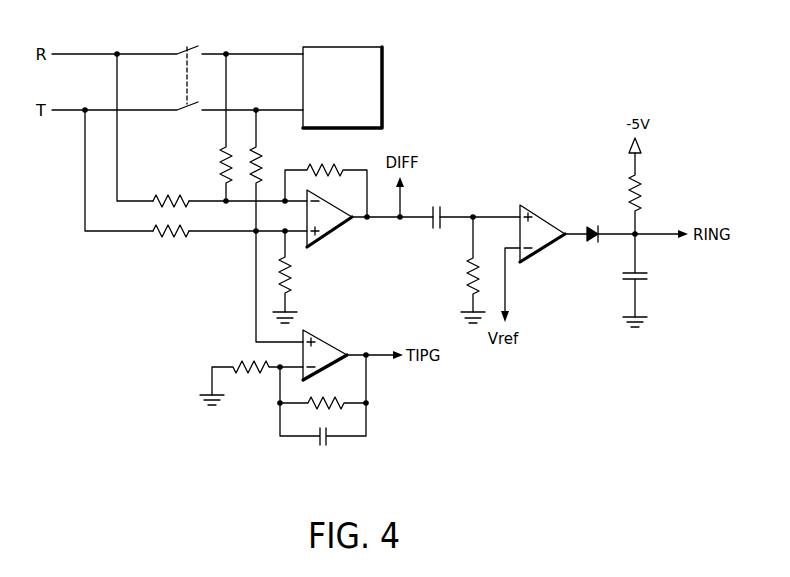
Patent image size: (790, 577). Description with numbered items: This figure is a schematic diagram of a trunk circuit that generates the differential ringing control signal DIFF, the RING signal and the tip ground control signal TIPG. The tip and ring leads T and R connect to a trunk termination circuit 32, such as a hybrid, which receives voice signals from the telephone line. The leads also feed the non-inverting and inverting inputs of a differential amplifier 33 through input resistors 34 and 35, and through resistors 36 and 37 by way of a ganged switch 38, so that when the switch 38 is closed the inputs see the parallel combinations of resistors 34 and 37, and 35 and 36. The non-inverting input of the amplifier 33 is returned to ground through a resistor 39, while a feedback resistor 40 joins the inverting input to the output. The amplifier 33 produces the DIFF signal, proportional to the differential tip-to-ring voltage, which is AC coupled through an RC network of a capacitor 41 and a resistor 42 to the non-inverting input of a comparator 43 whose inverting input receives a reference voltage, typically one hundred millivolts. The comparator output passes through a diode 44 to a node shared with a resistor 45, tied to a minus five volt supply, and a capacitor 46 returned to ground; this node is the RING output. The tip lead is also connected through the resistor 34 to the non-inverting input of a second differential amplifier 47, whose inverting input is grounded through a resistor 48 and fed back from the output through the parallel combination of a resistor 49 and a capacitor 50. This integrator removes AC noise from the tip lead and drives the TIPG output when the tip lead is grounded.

The trunk termination circuit 32 is at (350, 46).
The differential amplifier 33 is at (330, 233).
The input resistor 34 is at (167, 237).
The input resistor 35 is at (173, 197).
The resistor 36 is at (221, 165).
The resistor 37 is at (262, 170).
The ganged switch 38 is at (167, 84).
The resistor 39 is at (290, 272).
The feedback resistor 40 is at (321, 167).
The capacitor 41 is at (444, 210).
The resistor 42 is at (469, 270).
The comparator 43 is at (545, 217).
The diode 44 is at (594, 242).
The resistor 45 is at (645, 190).
The capacitor 46 is at (650, 278).
The differential amplifier 47 is at (337, 345).
The resistor 48 is at (254, 372).
The resistor 49 is at (328, 401).
The capacitor 50 is at (328, 440).